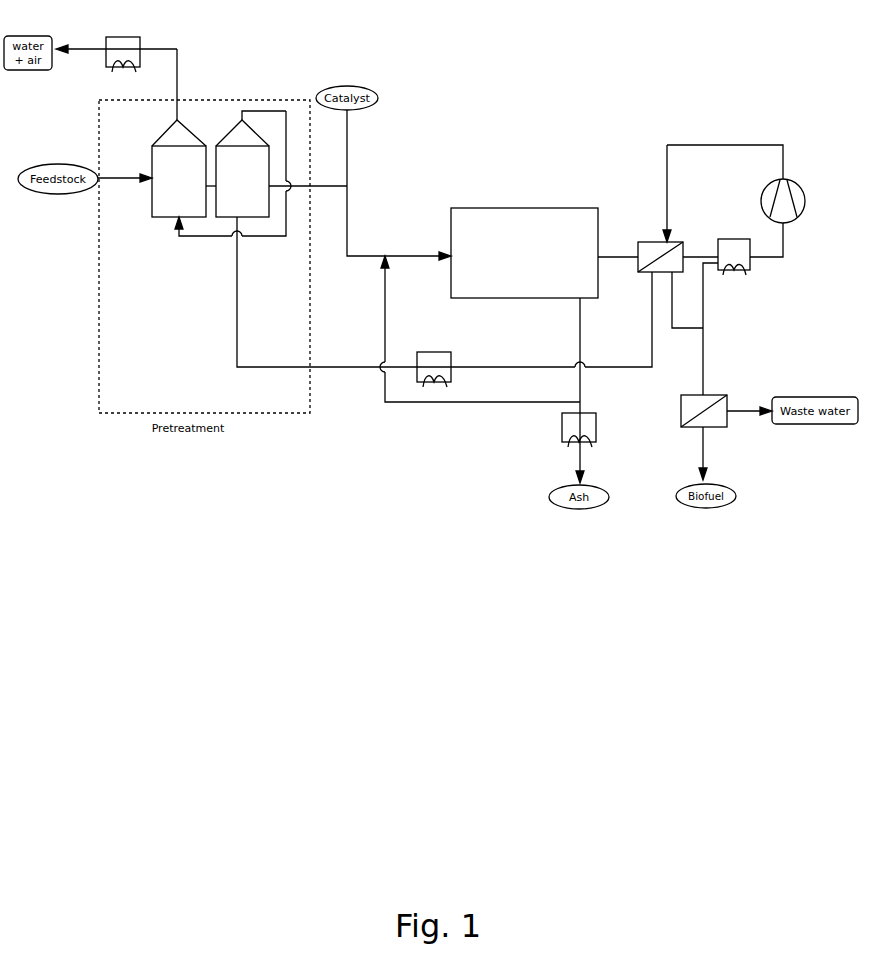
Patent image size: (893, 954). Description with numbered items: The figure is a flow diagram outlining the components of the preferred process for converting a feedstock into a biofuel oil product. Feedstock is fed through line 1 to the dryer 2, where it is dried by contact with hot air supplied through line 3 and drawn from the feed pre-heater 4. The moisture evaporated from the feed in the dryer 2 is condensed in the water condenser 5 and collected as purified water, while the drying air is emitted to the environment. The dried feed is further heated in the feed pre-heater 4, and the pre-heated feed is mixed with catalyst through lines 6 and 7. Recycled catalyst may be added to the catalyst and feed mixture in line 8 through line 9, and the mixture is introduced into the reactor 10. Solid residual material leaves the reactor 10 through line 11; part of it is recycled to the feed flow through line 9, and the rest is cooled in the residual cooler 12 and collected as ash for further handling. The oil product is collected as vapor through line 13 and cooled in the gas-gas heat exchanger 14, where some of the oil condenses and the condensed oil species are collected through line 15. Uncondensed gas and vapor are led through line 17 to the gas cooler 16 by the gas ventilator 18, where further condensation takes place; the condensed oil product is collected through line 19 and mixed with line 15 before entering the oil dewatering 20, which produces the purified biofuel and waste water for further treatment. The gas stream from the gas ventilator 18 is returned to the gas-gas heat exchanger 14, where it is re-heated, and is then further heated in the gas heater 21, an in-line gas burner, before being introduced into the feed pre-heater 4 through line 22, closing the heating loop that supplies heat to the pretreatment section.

The feed line 1 is at (125, 171).
The dryer 2 is at (170, 146).
The hot air line 3 is at (233, 183).
The feed pre-heater 4 is at (236, 146).
The water condenser 5 is at (134, 40).
The pre-heated feed line 6 is at (308, 195).
The catalyst line 7 is at (353, 148).
The catalyst and feed mixture line 8 is at (399, 223).
The recycle line 9 is at (477, 329).
The reactor 10 is at (520, 212).
The solid residue line 11 is at (573, 390).
The residual cooler 12 is at (596, 425).
The oil vapor line 13 is at (618, 248).
The gas-gas heat exchanger 14 is at (672, 240).
The condensed oil line 15 is at (687, 300).
The gas cooler 16 is at (720, 239).
The uncondensed gas line 17 is at (700, 249).
The gas ventilator 18 is at (805, 188).
The condensed oil product line 19 is at (713, 329).
The oil dewatering 20 is at (712, 396).
The gas heater 21 is at (433, 352).
The heated gas line 22 is at (444, 292).